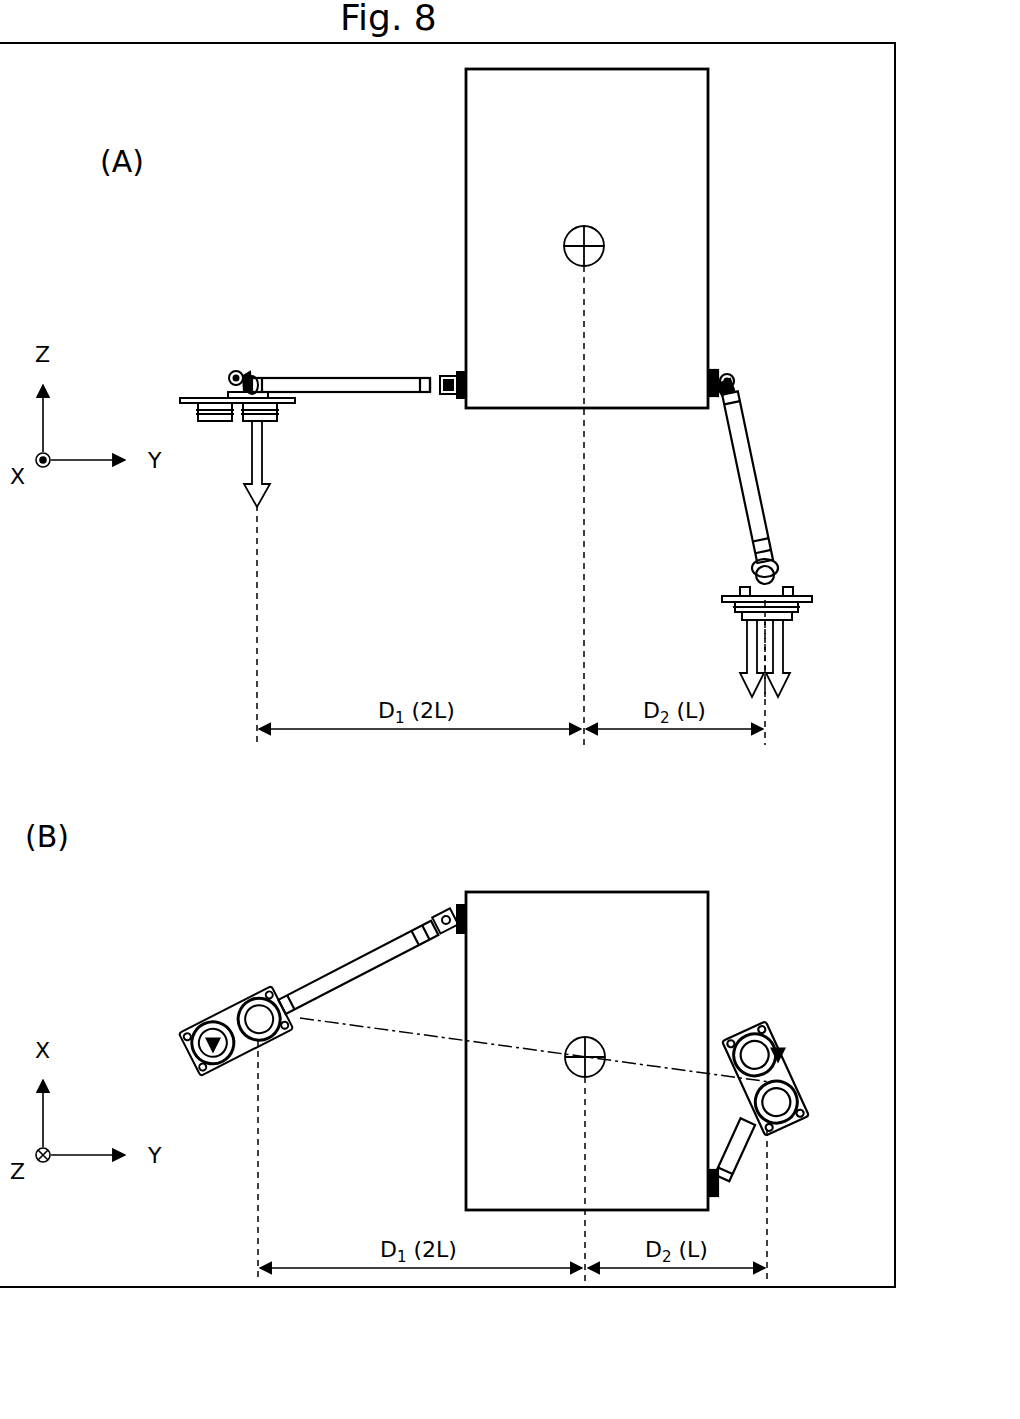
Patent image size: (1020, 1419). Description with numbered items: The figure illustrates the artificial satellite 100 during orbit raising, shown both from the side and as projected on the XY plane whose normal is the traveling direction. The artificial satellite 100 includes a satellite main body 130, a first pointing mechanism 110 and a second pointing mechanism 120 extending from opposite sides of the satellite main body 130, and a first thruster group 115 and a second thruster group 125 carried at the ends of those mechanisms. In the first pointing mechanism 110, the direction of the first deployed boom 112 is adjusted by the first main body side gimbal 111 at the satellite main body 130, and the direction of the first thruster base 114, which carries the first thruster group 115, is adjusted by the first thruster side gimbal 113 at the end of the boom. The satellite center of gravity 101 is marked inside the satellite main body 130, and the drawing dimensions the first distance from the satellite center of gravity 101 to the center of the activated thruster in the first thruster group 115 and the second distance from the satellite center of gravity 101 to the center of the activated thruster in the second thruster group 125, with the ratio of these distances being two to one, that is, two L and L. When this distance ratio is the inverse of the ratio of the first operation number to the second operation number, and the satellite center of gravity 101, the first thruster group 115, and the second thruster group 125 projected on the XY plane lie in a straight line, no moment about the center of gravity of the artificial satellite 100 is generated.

The artificial satellite 100 is at (226, 183).
The satellite center of gravity 101 is at (584, 226).
The first pointing mechanism 110 is at (336, 325).
The first main body side gimbal 111 is at (447, 374).
The first deployed boom 112 is at (340, 374).
The first thruster side gimbal 113 is at (250, 373).
The first thruster base 114 is at (198, 398).
The first thruster group 115 is at (207, 434).
The second pointing mechanism 120 is at (768, 450).
The second thruster group 125 is at (790, 630).
The satellite main body 130 is at (708, 141).